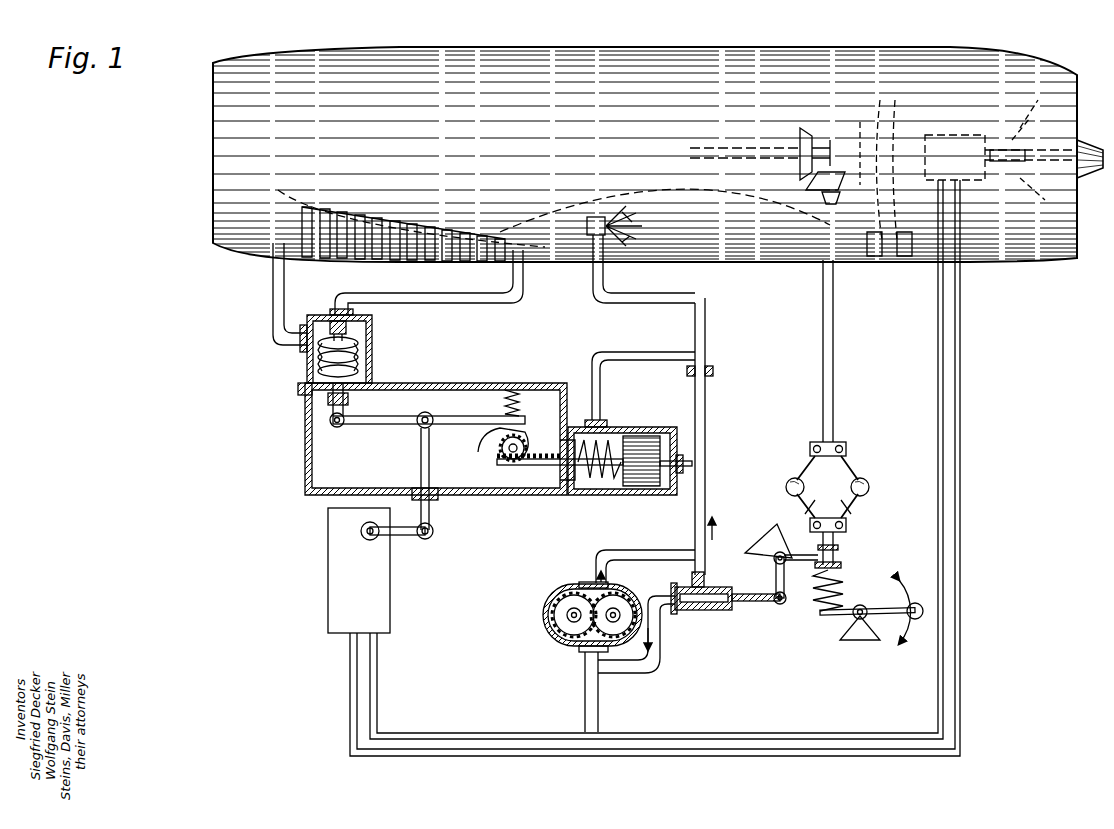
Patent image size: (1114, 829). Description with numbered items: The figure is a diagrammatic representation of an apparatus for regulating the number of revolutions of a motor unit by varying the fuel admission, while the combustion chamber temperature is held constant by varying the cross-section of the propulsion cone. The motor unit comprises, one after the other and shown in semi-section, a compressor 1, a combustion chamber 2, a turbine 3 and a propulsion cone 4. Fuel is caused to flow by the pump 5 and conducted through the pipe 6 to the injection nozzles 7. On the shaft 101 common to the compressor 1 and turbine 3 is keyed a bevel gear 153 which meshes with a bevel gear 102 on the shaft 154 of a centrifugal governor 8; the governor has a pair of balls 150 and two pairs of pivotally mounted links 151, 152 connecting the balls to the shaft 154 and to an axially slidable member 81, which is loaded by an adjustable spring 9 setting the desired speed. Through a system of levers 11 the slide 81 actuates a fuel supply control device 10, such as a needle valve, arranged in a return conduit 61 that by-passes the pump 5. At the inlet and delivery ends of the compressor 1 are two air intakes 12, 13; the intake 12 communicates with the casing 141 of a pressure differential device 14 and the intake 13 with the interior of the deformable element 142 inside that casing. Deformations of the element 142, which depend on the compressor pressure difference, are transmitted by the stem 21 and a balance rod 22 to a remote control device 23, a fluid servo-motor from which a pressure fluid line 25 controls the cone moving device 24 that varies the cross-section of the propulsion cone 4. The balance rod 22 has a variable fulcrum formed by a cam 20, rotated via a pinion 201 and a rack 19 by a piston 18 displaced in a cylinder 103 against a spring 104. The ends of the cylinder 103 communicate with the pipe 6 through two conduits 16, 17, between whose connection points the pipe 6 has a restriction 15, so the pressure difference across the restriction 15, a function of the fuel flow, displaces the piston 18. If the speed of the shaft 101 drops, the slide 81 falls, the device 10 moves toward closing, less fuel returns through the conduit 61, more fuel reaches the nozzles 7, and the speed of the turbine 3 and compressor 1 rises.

The compressor 1 is at (330, 262).
The combustion chamber 2 is at (665, 216).
The turbine 3 is at (882, 262).
The propulsion cone 4 is at (1062, 110).
The pump 5 is at (560, 640).
The pipe 6 is at (706, 440).
The return conduit 61 is at (660, 645).
The injection nozzles 7 is at (590, 250).
The centrifugal governor 8 is at (850, 452).
The axially slidable member 81 is at (836, 542).
The spring 9 is at (838, 582).
The fuel supply control device 10 is at (705, 588).
The system of levers 11 is at (778, 604).
The air intake 12 is at (272, 250).
The air intake 13 is at (520, 262).
The pressure differential device 14 is at (372, 365).
The casing 141 is at (302, 345).
The deformable element 142 is at (360, 348).
The restriction 15 is at (708, 367).
The conduit 16 is at (655, 352).
The conduit 17 is at (688, 475).
The piston 18 is at (665, 418).
The rack 19 is at (600, 490).
The cam 20 is at (530, 415).
The pinion 201 is at (513, 470).
The stem 21 is at (332, 405).
The balance rod 22 is at (345, 428).
The remote control device 23 is at (328, 578).
The cone moving device 24 is at (975, 262).
The pressure fluid line 25 is at (961, 622).
The shaft 101 is at (750, 148).
The bevel gear 102 is at (828, 195).
The cylinder 103 is at (650, 488).
The spring 104 is at (600, 440).
The balls 150 is at (870, 490).
The links 151 is at (855, 466).
The links 152 is at (828, 499).
The bevel gear 153 is at (820, 146).
The shaft 154 is at (835, 342).